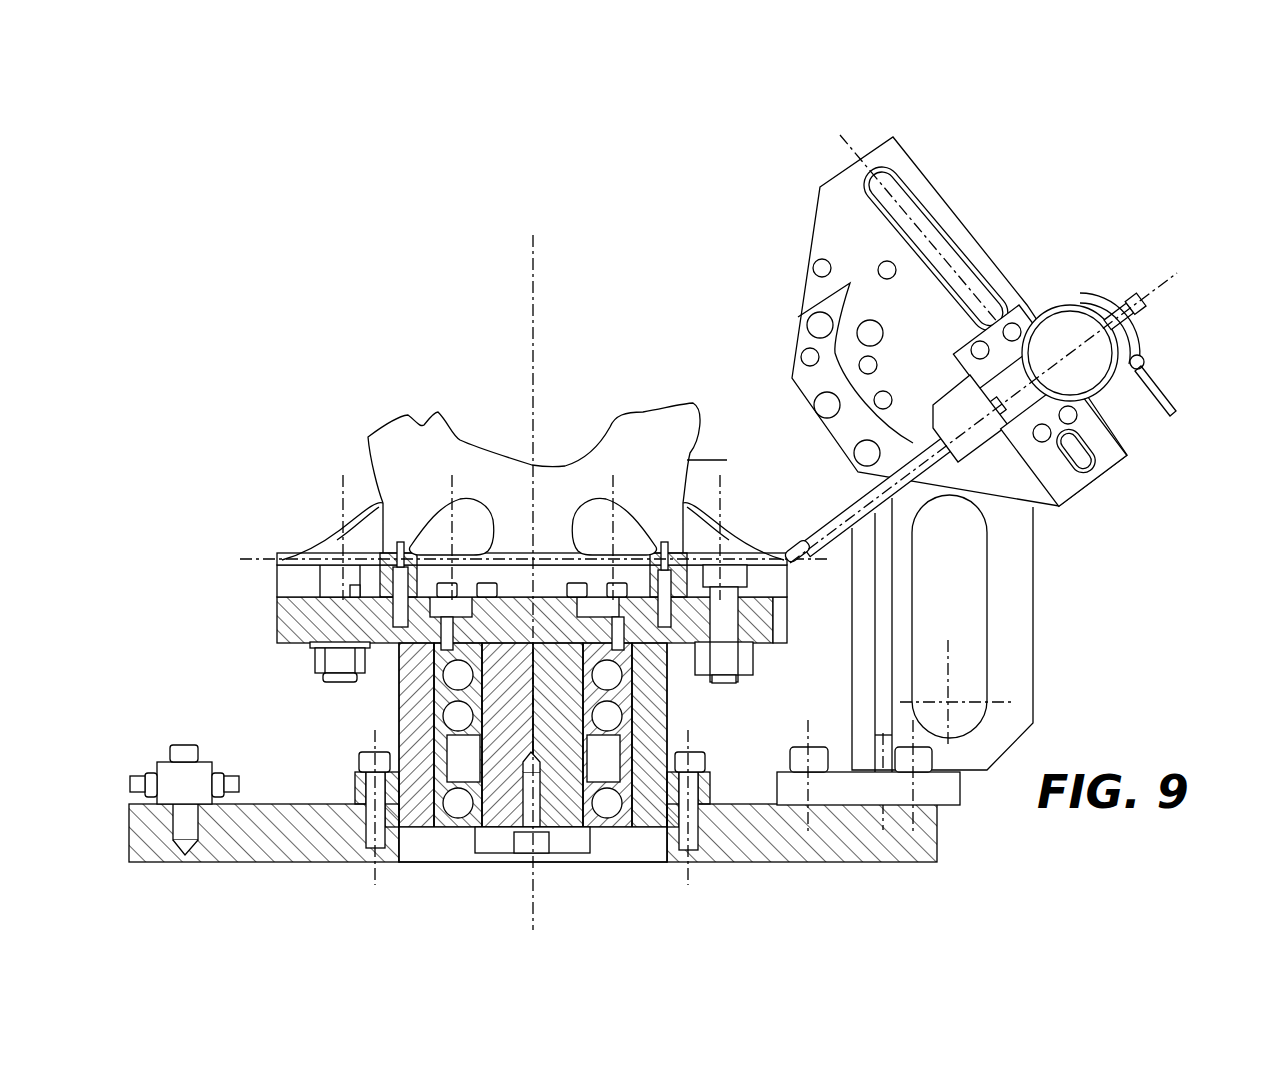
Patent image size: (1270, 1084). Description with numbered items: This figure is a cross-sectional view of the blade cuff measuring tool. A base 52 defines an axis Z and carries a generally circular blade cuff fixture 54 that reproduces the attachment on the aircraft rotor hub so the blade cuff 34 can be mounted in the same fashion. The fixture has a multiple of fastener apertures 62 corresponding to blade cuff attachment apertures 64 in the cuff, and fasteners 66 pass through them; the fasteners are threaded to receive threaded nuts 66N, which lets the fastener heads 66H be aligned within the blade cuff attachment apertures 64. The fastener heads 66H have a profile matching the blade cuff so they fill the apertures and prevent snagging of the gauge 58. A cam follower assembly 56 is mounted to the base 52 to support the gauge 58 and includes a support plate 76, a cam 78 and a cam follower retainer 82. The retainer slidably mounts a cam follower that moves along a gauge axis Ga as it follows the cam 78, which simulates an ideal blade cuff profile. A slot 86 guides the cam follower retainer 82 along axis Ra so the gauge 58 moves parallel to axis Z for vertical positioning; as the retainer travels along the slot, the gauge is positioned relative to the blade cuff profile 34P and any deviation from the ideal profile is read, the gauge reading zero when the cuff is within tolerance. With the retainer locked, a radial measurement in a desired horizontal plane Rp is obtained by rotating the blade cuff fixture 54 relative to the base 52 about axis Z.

The retainer axis Ra is at (848, 135).
The slot 86 is at (913, 225).
The cam follower assembly 56 is at (978, 225).
The gauge 58 is at (1077, 318).
The gauge axis Ga is at (1175, 275).
The cam 78 is at (790, 377).
The axis Z is at (531, 275).
The blade cuff 34 is at (604, 462).
The blade cuff profile 34P is at (727, 460).
The fastener heads 66H is at (346, 505).
The horizontal plane Rp is at (255, 559).
The blade cuff attachment apertures 64 is at (362, 517).
The fastener apertures 62 is at (320, 578).
The fasteners 66 is at (300, 585).
The threaded nuts 66N is at (350, 663).
The blade cuff fixture 54 is at (760, 650).
The support plate 76 is at (1018, 632).
The cam follower retainer 82 is at (1127, 455).
The base 52 is at (878, 848).